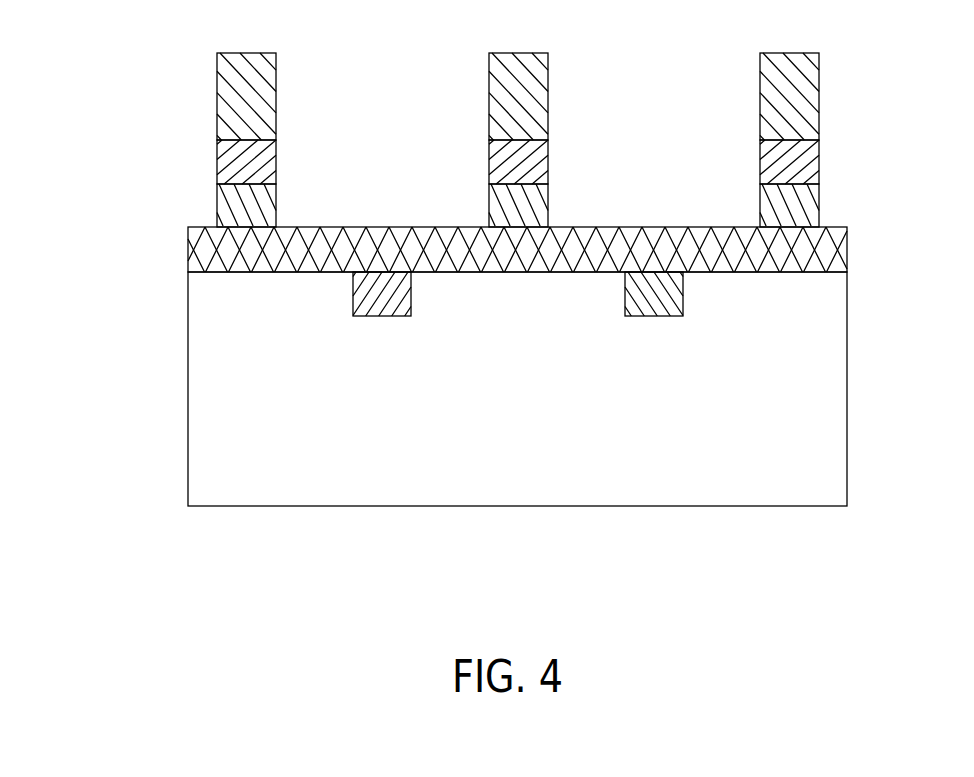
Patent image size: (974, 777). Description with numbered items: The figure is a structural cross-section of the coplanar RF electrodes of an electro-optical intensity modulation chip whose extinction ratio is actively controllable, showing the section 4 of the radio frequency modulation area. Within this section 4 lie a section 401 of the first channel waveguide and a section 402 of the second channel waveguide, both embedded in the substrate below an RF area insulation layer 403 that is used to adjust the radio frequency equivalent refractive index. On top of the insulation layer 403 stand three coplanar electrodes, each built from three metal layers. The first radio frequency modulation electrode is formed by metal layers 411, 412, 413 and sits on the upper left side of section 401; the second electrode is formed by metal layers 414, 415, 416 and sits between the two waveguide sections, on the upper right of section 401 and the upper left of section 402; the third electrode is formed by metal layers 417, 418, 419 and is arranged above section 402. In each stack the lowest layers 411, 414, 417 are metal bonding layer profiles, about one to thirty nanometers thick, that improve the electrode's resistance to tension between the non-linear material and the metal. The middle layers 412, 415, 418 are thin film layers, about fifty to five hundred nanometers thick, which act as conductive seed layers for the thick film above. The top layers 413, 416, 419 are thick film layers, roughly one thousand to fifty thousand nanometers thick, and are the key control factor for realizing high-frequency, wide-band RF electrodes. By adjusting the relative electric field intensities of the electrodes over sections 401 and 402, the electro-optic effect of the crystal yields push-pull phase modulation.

The section of the radio frequency modulation area 4 is at (815, 440).
The section of the first channel waveguide 401 is at (355, 295).
The section of the second channel waveguide 402 is at (683, 297).
The RF area insulation layer 403 is at (823, 252).
The first metal layer of the first radio frequency modulation electrode 411 is at (232, 205).
The second metal layer of the first radio frequency modulation electrode 412 is at (230, 161).
The third metal layer of the first radio frequency modulation electrode 413 is at (235, 103).
The first metal layer of the second radio frequency modulation electrode 414 is at (503, 205).
The second metal layer of the second radio frequency modulation electrode 415 is at (500, 161).
The third metal layer of the second radio frequency modulation electrode 416 is at (505, 103).
The first metal layer of the third radio frequency modulation electrode 417 is at (800, 205).
The second metal layer of the third radio frequency modulation electrode 418 is at (805, 160).
The third metal layer of the third radio frequency modulation electrode 419 is at (805, 103).